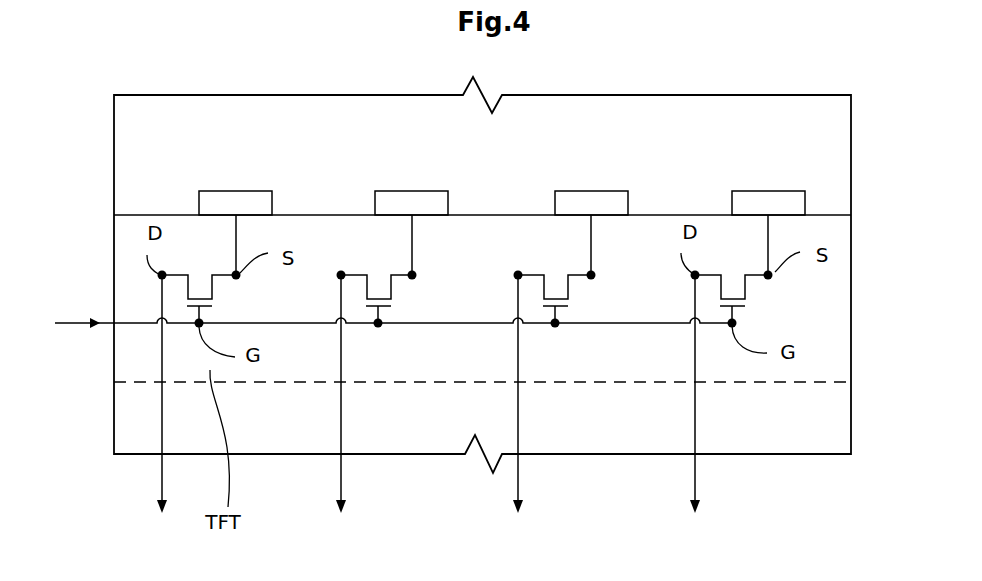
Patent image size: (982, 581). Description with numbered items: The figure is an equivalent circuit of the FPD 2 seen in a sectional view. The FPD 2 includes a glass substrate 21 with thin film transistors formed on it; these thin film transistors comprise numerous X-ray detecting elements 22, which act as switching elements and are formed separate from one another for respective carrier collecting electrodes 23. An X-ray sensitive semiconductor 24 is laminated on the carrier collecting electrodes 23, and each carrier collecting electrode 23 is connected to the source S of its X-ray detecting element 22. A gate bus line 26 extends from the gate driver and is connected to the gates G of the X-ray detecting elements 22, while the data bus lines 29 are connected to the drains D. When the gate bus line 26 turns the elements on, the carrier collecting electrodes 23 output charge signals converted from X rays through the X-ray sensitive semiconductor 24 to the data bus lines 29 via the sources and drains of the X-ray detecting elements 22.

The FPD 2 is at (597, 477).
The glass substrate 21 is at (307, 427).
The X-ray detecting element 22 is at (225, 306).
The carrier collecting electrode 23 is at (227, 198).
The X-ray sensitive semiconductor 24 is at (160, 133).
The gate bus line 26 is at (77, 325).
The data bus line 29 is at (160, 485).